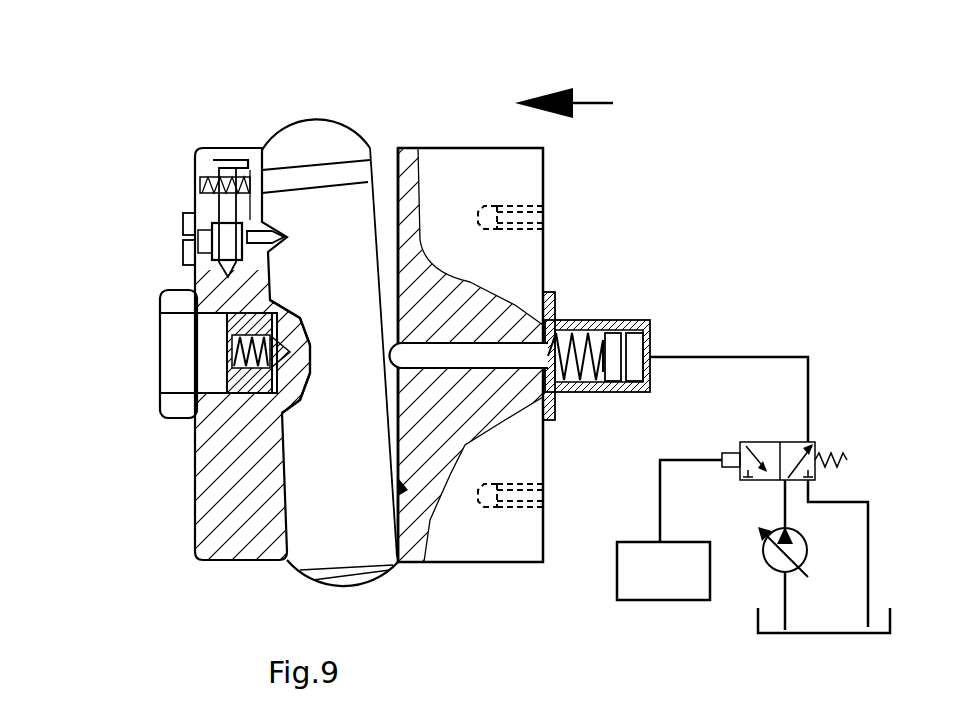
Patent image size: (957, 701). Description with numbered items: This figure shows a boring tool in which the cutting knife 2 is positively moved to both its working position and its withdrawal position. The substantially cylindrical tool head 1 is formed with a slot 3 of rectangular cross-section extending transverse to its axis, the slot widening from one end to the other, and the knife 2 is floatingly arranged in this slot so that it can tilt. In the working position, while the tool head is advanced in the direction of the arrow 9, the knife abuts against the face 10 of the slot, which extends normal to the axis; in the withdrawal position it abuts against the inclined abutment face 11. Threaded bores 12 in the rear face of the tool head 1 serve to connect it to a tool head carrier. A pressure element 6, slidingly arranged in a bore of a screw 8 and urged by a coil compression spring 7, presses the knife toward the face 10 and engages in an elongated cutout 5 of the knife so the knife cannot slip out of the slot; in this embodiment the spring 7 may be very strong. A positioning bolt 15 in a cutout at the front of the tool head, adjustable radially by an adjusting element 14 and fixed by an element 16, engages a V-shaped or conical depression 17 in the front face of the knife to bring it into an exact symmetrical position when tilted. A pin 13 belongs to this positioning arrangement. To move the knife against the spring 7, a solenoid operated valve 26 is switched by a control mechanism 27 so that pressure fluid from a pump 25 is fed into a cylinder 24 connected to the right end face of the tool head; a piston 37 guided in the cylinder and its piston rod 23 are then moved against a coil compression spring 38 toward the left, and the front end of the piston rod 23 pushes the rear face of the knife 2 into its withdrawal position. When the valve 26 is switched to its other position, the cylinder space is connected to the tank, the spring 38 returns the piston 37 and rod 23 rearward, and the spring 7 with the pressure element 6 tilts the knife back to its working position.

The tool head 1 is at (455, 180).
The cutting knife 2 is at (295, 152).
The slot 3 is at (387, 172).
The cutout 5 is at (183, 258).
The pressure element 6 is at (200, 447).
The coil compression spring 7 is at (193, 415).
The screw 8 is at (177, 368).
The arrow 9 is at (590, 103).
The face of the slot 10 is at (402, 485).
The abutment face 11 is at (287, 508).
The threaded bores 12 is at (525, 218).
The pin 13 is at (229, 167).
The adjusting element 14 is at (200, 180).
The positioning bolt 15 is at (207, 160).
The fixing element 16 is at (183, 218).
The V-shaped or conical depression 17 is at (262, 237).
The piston rod 23 is at (500, 358).
The cylinder 24 is at (630, 350).
The pump 25 is at (805, 545).
The solenoid operated valve 26 is at (817, 443).
The control mechanism 27 is at (640, 577).
The piston 37 is at (610, 360).
The coil compression spring 38 is at (560, 378).